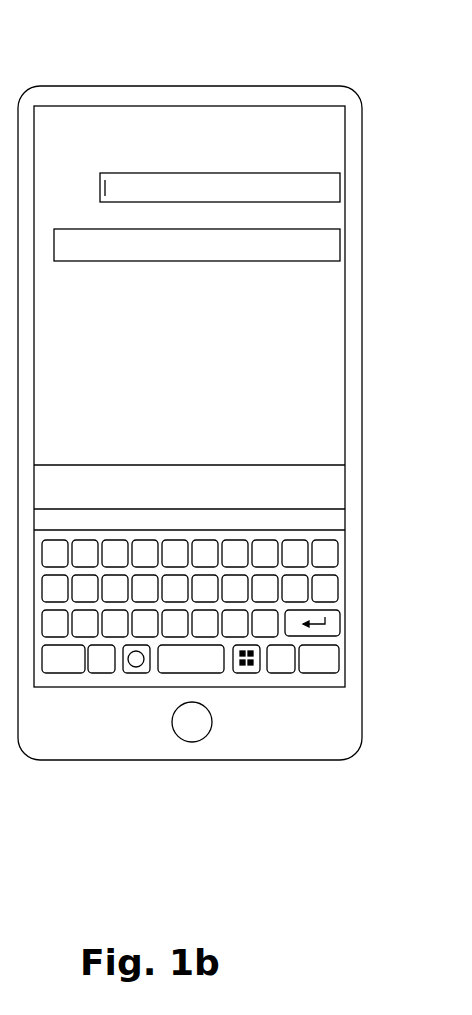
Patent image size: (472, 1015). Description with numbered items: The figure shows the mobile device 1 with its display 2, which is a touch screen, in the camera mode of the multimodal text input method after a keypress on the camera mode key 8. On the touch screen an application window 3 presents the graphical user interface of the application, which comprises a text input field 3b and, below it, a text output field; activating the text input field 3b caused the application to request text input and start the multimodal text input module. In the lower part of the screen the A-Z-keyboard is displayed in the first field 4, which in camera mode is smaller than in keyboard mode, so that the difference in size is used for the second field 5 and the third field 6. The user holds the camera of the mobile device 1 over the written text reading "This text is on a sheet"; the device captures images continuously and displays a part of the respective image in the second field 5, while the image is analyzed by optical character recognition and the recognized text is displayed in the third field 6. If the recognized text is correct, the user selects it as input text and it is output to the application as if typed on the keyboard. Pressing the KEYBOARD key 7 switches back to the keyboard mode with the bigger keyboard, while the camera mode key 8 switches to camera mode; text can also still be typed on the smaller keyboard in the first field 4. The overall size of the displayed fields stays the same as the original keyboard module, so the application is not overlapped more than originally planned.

The mobile device 1 is at (203, 84).
The display 2 is at (287, 103).
The application window 3 is at (320, 303).
The text input field 3b is at (300, 188).
The first field 4 is at (337, 604).
The second field 5 is at (330, 485).
The third field 6 is at (330, 522).
The KEYBOARD key 7 is at (245, 673).
The camera mode key 8 is at (138, 667).